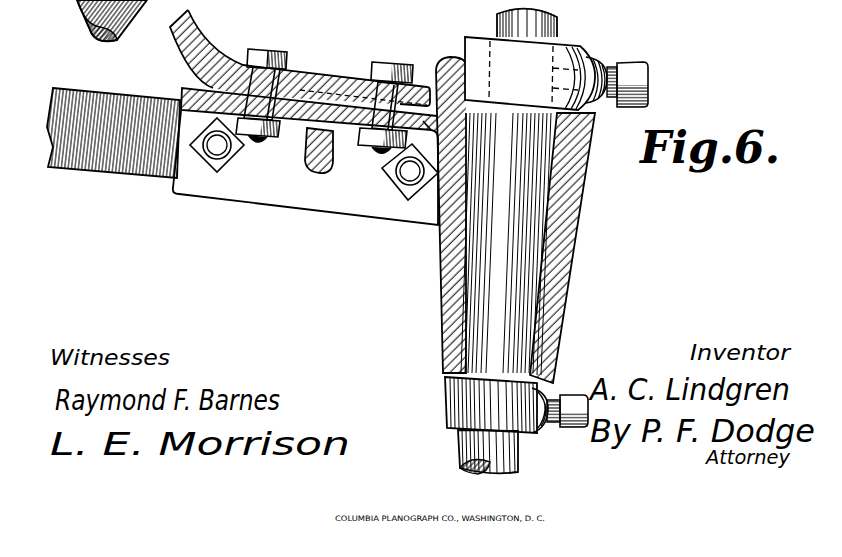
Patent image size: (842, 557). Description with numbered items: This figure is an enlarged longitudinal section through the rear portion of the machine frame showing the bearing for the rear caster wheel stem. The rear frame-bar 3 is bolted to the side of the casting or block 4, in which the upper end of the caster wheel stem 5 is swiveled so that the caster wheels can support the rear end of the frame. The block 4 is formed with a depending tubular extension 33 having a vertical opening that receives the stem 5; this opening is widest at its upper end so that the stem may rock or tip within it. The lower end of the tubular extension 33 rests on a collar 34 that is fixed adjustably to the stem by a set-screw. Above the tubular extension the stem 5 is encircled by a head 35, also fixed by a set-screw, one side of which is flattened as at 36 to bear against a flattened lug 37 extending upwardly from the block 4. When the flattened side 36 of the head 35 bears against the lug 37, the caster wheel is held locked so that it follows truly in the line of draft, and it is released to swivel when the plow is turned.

The frame-bar 3 is at (118, 97).
The casting or block 4 is at (327, 73).
The caster wheel stem 5 is at (560, 27).
The depending tubular extension 33 is at (577, 231).
The collar 34 is at (445, 402).
The head 35 is at (590, 50).
The flattened side 36 is at (466, 48).
The flattened lug 37 is at (440, 64).